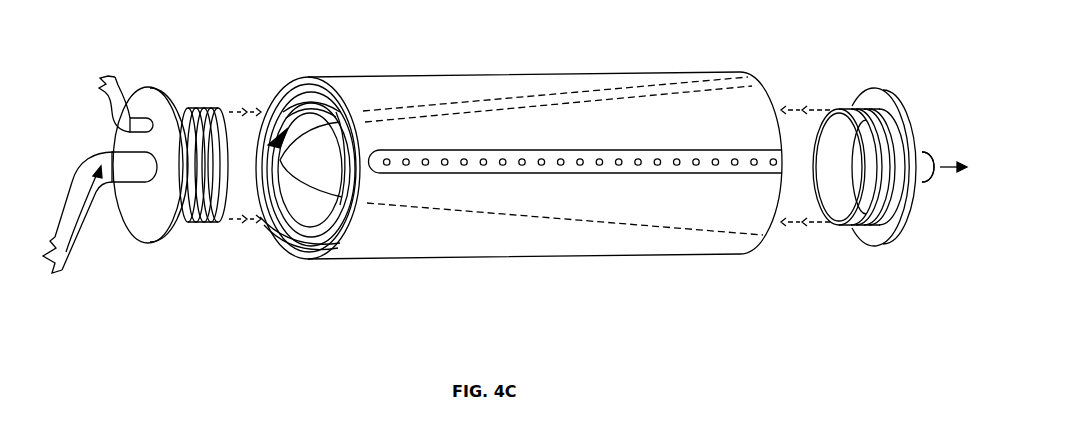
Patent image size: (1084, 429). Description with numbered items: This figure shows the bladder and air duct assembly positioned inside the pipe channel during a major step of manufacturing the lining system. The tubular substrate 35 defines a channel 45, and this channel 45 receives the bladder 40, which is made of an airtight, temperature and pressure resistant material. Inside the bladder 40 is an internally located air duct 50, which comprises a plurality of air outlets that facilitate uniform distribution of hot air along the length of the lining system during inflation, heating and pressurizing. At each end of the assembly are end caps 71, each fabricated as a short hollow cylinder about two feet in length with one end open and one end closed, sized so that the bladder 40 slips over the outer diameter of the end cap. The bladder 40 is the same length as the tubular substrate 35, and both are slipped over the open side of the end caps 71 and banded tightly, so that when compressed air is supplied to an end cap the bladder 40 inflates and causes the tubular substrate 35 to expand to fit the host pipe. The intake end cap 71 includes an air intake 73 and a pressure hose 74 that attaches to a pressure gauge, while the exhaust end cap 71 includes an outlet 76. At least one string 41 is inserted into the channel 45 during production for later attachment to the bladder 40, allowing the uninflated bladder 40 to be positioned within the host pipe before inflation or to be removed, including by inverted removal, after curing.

The tubular substrate 35 is at (380, 83).
The bladder 40 is at (447, 214).
The string 41 is at (290, 122).
The channel 45 is at (285, 131).
The air duct 50 is at (621, 128).
The end cap 71 is at (159, 209).
The air intake 73 is at (92, 223).
The pressure hose 74 is at (140, 118).
The outlet 76 is at (929, 153).